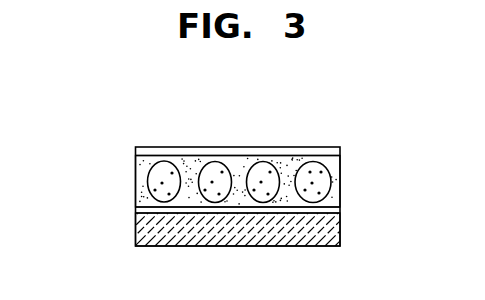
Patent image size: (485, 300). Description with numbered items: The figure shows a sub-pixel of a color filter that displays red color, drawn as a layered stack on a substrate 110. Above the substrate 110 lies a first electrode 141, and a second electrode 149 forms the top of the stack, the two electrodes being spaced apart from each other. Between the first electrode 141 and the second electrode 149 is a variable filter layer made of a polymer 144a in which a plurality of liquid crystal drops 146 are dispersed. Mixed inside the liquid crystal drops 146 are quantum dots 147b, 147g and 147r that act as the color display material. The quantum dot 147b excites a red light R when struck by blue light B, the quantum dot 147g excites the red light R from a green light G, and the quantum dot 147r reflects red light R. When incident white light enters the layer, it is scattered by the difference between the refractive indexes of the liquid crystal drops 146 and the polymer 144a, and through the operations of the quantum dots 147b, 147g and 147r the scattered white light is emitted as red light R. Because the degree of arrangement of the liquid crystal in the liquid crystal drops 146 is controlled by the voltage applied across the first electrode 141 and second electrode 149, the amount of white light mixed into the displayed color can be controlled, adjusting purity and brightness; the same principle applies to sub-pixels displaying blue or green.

The substrate 110 is at (340, 234).
The first electrode 141 is at (340, 210).
The polymer 144a is at (340, 172).
The liquid crystal drops 146 is at (331, 189).
The quantum dot 147b is at (170, 196).
The quantum dot 147g is at (218, 196).
The quantum dot 147r is at (268, 196).
The second electrode 149 is at (340, 150).
The blue light B is at (160, 166).
The green light G is at (212, 166).
The red light R is at (260, 166).